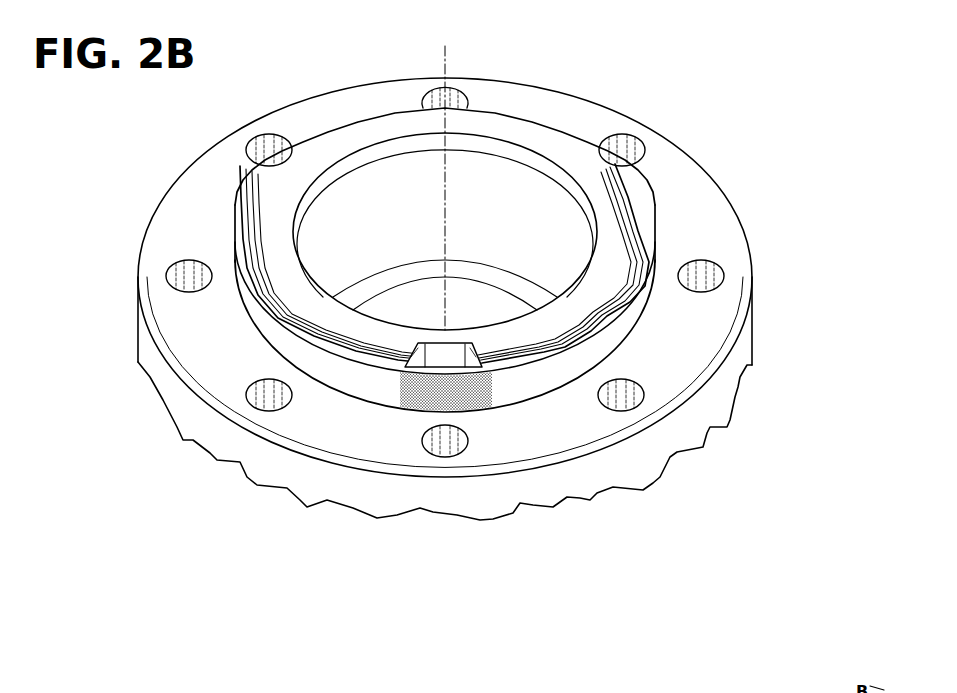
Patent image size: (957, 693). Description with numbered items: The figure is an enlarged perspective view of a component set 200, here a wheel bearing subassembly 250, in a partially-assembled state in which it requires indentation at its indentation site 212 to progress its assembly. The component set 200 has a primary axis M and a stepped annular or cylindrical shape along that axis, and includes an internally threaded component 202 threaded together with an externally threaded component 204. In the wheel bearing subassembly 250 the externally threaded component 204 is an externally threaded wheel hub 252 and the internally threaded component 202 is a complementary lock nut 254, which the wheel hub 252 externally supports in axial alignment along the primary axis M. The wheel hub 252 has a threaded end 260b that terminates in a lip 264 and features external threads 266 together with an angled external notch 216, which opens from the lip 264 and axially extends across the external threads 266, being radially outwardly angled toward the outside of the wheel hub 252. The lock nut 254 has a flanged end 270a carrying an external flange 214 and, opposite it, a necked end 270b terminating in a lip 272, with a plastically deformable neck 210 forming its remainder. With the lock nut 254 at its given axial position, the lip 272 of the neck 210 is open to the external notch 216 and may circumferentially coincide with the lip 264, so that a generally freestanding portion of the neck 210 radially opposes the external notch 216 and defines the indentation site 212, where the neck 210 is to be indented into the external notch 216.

The component set 200 is at (410, 304).
The wheel bearing subassembly 250 is at (410, 304).
The internally threaded component 202 is at (410, 338).
The lock nut 254 is at (410, 338).
The externally threaded component 204 is at (445, 231).
The wheel hub 252 is at (300, 208).
The neck 210 is at (445, 327).
The indentation site 212 is at (475, 408).
The external flange 214 is at (470, 457).
The external notch 216 is at (458, 357).
The threaded end 260b is at (466, 310).
The lip 264 is at (463, 310).
The external threads 266 is at (463, 317).
The flanged end 270a is at (267, 468).
The necked end 270b is at (280, 347).
The lip 272 is at (258, 317).
The primary axis M is at (440, 46).